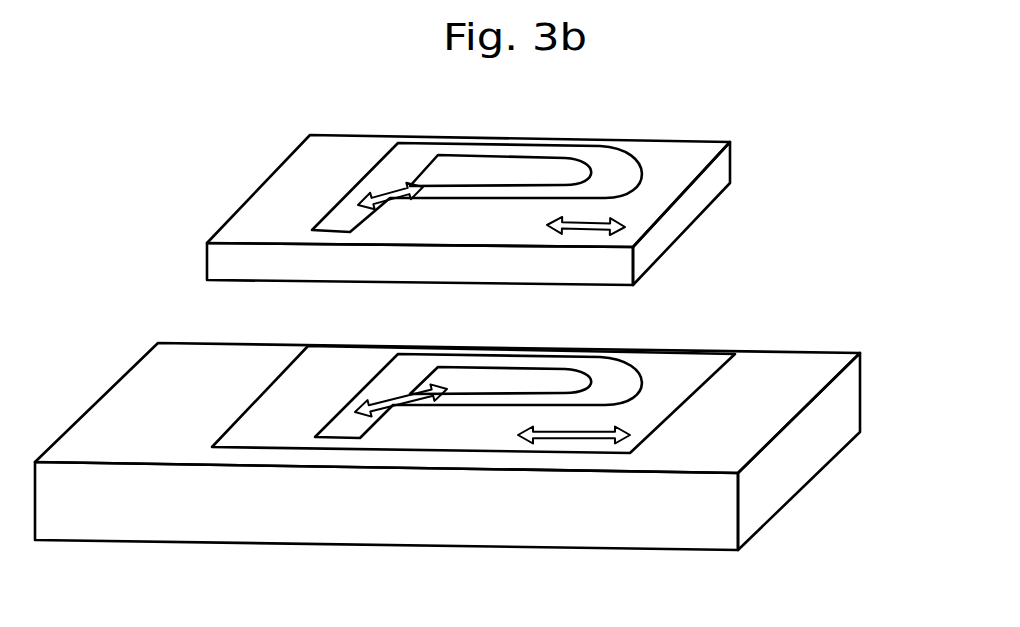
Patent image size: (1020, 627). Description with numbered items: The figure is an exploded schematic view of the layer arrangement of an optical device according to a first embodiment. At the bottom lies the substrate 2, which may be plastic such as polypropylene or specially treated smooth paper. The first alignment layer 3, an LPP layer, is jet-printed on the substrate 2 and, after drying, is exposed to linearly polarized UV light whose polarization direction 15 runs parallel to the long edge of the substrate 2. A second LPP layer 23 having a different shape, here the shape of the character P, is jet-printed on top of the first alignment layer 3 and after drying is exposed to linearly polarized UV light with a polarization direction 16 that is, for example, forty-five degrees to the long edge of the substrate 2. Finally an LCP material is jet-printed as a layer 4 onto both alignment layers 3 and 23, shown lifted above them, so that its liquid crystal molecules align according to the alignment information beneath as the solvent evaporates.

The substrate 2 is at (845, 418).
The first alignment layer 3 is at (697, 368).
The LCP layer 4 is at (685, 158).
The polarization direction 15 is at (565, 438).
The polarization direction 16 is at (392, 400).
The second LPP layer 23 is at (615, 382).